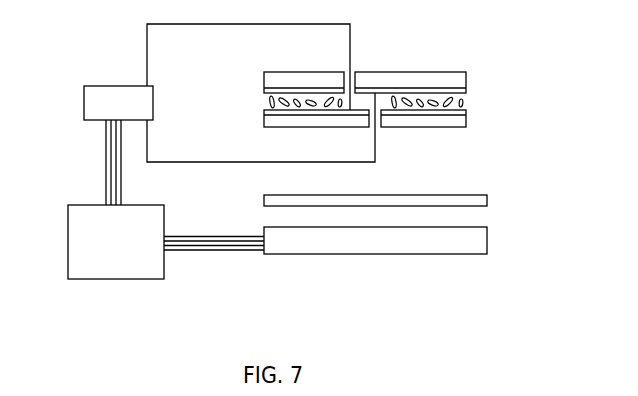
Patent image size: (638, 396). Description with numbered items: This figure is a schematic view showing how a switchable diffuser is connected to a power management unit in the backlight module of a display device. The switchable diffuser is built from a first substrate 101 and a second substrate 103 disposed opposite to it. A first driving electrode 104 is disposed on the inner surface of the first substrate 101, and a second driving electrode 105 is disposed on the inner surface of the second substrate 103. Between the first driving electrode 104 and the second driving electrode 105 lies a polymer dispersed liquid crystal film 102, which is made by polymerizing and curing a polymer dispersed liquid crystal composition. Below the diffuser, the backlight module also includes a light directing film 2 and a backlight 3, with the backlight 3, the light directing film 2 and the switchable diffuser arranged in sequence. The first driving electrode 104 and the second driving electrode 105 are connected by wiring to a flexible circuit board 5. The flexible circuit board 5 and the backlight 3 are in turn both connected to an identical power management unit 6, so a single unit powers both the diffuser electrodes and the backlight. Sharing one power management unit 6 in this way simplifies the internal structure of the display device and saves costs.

The first substrate 101 is at (466, 80).
The polymer dispersed liquid crystal film 102 is at (466, 102).
The second substrate 103 is at (460, 122).
The first driving electrode 104 is at (265, 92).
The second driving electrode 105 is at (265, 110).
The light directing film 2 is at (482, 202).
The backlight 3 is at (482, 237).
The flexible circuit board 5 is at (118, 103).
The power management unit 6 is at (116, 242).